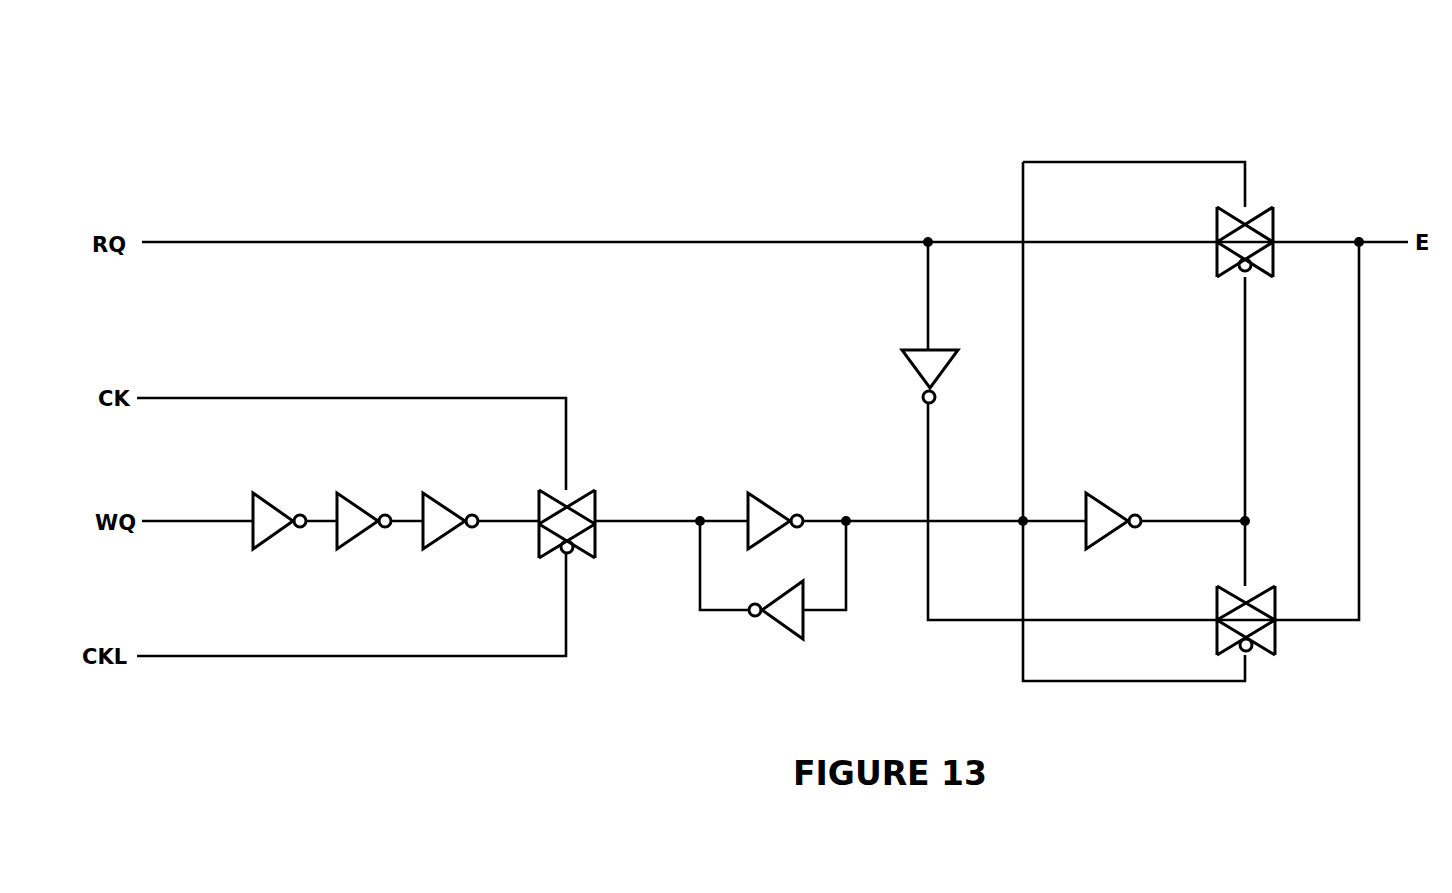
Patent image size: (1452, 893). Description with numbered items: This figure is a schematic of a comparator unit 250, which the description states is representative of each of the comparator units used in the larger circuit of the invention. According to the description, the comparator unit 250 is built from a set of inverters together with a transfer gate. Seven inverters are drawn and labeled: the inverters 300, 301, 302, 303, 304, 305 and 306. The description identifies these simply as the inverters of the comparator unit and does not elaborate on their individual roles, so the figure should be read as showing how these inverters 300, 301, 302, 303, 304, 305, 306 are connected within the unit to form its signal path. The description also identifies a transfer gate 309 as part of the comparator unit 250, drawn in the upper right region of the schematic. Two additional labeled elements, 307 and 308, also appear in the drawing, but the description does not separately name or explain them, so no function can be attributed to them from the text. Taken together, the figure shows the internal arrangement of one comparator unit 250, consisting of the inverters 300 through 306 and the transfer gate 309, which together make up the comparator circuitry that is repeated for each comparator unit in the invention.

The comparator unit 250 is at (430, 95).
The inverter 300 is at (272, 522).
The inverter 301 is at (347, 526).
The inverter 302 is at (448, 522).
The inverter 303 is at (762, 522).
The inverter 304 is at (788, 608).
The inverter 305 is at (925, 362).
The inverter 306 is at (1100, 522).
The transmission gate 307 is at (580, 508).
The transmission gate 308 is at (1258, 606).
The transfer gate 309 is at (1260, 228).